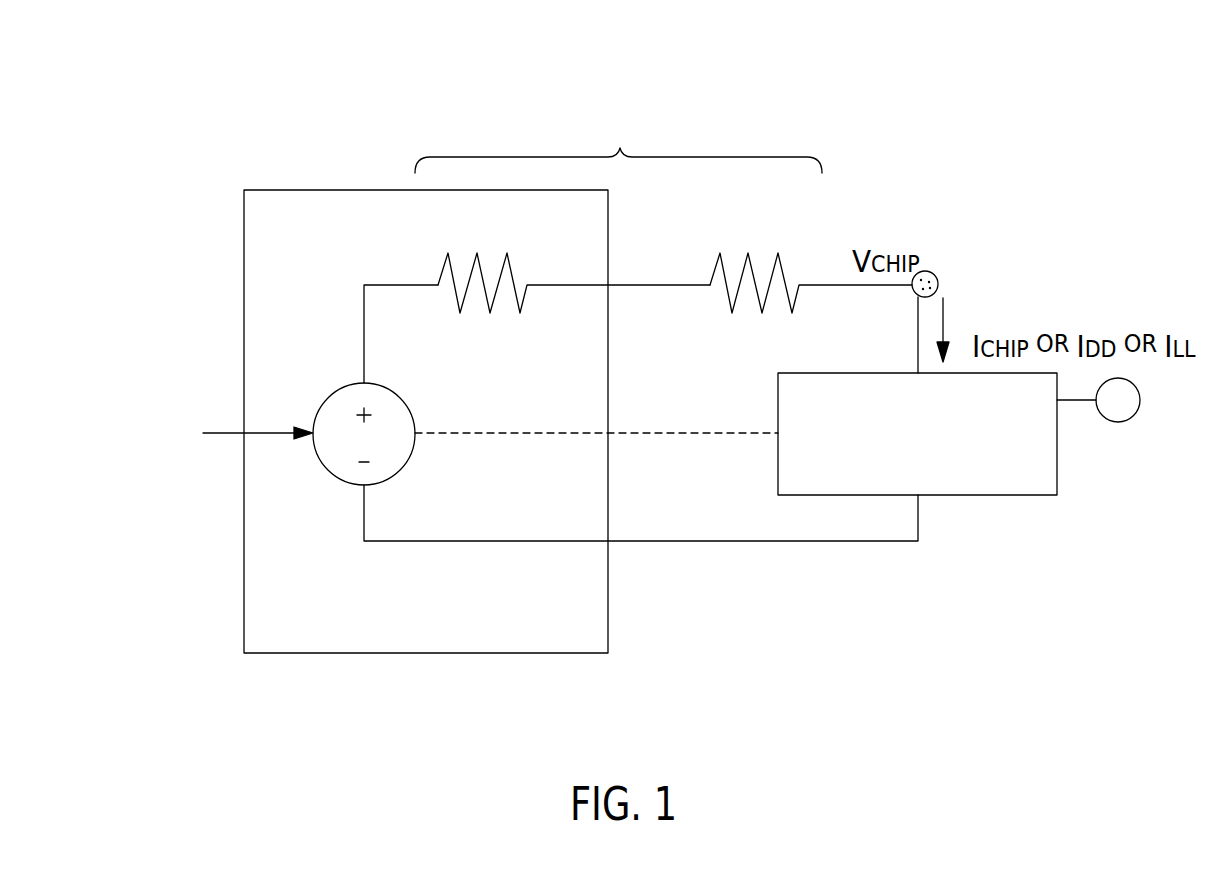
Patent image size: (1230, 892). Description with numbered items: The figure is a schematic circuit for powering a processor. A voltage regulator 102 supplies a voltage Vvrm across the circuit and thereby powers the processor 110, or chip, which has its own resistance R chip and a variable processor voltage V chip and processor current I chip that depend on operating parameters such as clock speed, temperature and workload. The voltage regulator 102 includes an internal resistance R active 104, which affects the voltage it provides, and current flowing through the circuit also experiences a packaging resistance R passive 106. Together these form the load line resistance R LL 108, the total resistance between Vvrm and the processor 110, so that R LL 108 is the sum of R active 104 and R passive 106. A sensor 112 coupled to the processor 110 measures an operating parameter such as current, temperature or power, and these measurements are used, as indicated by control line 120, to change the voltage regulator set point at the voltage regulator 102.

The voltage regulator 102 is at (244, 290).
The internal resistance R active 104 is at (460, 305).
The packaging resistance R passive 106 is at (733, 305).
The load line resistance R LL 108 is at (498, 82).
The processor 110 is at (983, 496).
The sensor 112 is at (1140, 403).
The control line 120 is at (518, 432).